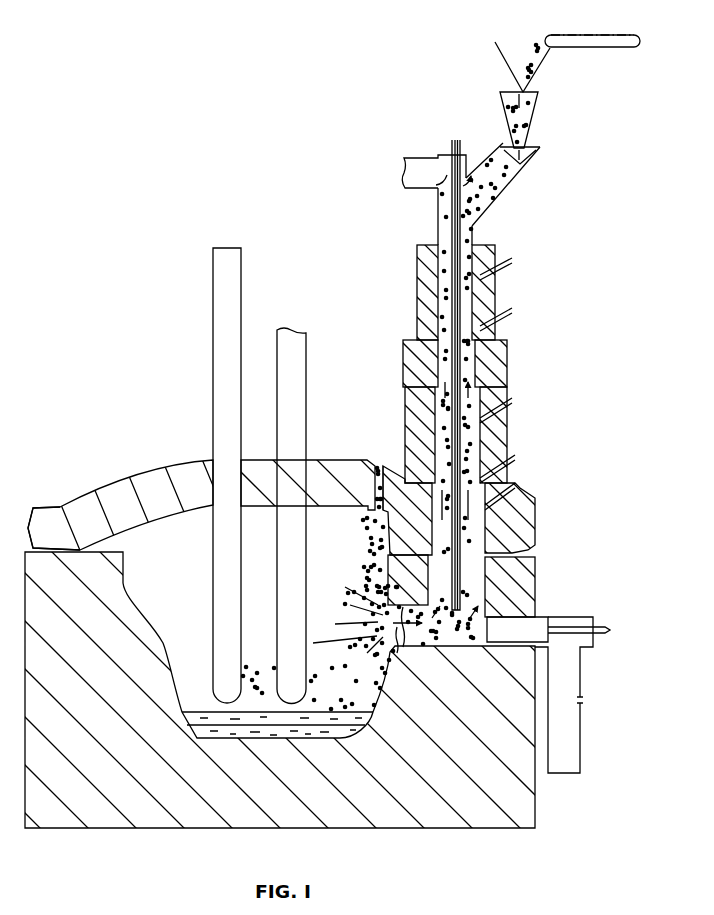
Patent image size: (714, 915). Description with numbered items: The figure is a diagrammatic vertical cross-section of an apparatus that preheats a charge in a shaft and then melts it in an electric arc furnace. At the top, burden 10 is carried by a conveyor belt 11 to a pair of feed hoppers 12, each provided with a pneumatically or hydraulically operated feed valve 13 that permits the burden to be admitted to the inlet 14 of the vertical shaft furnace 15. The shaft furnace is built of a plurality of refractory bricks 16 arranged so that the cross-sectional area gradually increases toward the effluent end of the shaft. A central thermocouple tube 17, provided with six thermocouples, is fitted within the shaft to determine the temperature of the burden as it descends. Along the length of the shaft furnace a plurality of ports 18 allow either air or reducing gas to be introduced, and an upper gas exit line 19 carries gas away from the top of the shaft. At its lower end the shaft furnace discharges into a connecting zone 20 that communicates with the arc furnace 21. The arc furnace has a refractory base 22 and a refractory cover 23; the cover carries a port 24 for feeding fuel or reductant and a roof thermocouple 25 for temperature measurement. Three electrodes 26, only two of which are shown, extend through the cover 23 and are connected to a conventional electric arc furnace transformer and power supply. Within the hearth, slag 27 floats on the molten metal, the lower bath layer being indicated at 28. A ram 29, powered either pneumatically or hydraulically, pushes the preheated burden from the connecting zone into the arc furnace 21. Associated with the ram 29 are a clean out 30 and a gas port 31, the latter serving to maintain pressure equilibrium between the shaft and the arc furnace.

The burden 10 is at (567, 97).
The conveyor belt 11 is at (571, 49).
The feed hoppers 12 is at (538, 72).
The feed valve 13 is at (527, 98).
The inlet 14 is at (518, 180).
The vertical shaft furnace 15 is at (478, 233).
The refractory bricks 16 is at (494, 296).
The central thermocouple tube 17 is at (459, 147).
The ports 18 is at (506, 400).
The upper gas exit line 19 is at (412, 162).
The connecting zone 20 is at (410, 642).
The arc furnace 21 is at (330, 510).
The refractory base 22 is at (527, 818).
The refractory cover 23 is at (167, 475).
The port 24 is at (378, 466).
The roof thermocouple 25 is at (107, 528).
The electrodes 26 is at (238, 287).
The slag 27 is at (244, 722).
The bottom layer 28 is at (322, 738).
The ram 29 is at (540, 622).
The clean out 30 is at (576, 746).
The gas port 31 is at (583, 704).